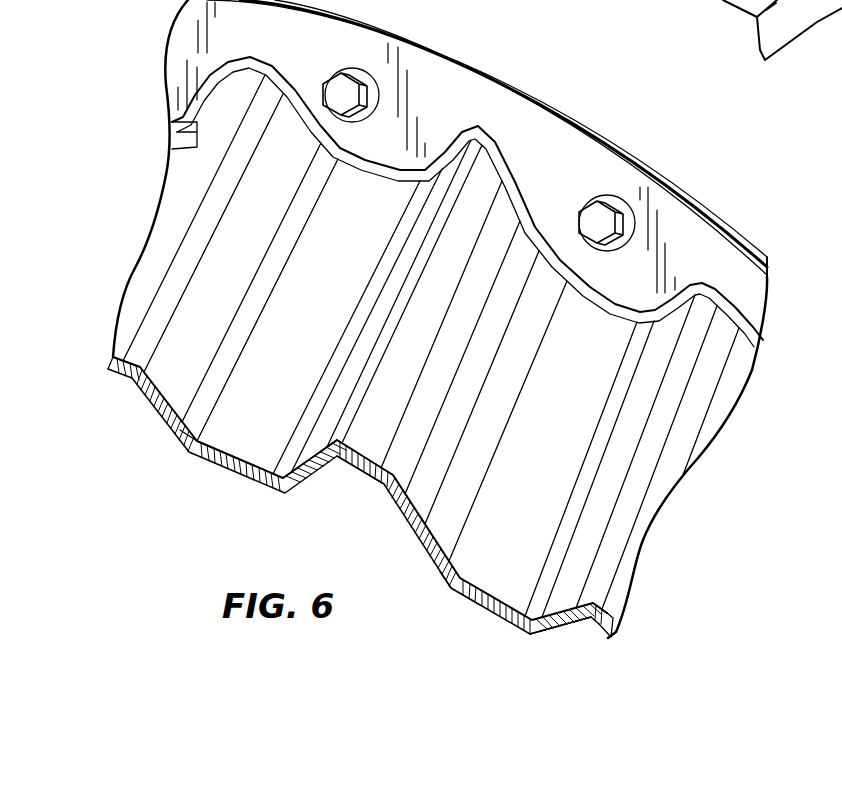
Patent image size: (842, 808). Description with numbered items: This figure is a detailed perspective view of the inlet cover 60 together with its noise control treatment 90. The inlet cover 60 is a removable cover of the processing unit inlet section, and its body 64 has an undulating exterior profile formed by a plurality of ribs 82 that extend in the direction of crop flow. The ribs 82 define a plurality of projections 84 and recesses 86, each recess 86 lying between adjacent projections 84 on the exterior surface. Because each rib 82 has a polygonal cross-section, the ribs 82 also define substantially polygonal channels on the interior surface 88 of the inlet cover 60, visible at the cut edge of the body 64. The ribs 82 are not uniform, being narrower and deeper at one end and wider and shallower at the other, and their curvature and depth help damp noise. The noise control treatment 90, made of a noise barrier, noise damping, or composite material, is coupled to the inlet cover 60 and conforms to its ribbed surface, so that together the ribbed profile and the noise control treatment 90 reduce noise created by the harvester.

The inlet cover 60 is at (140, 384).
The body 64 is at (193, 458).
The ribs 82 is at (362, 498).
The projections 84 is at (113, 357).
The recesses 86 is at (237, 475).
The interior surface 88 is at (460, 583).
The noise control treatment 90 is at (178, 226).